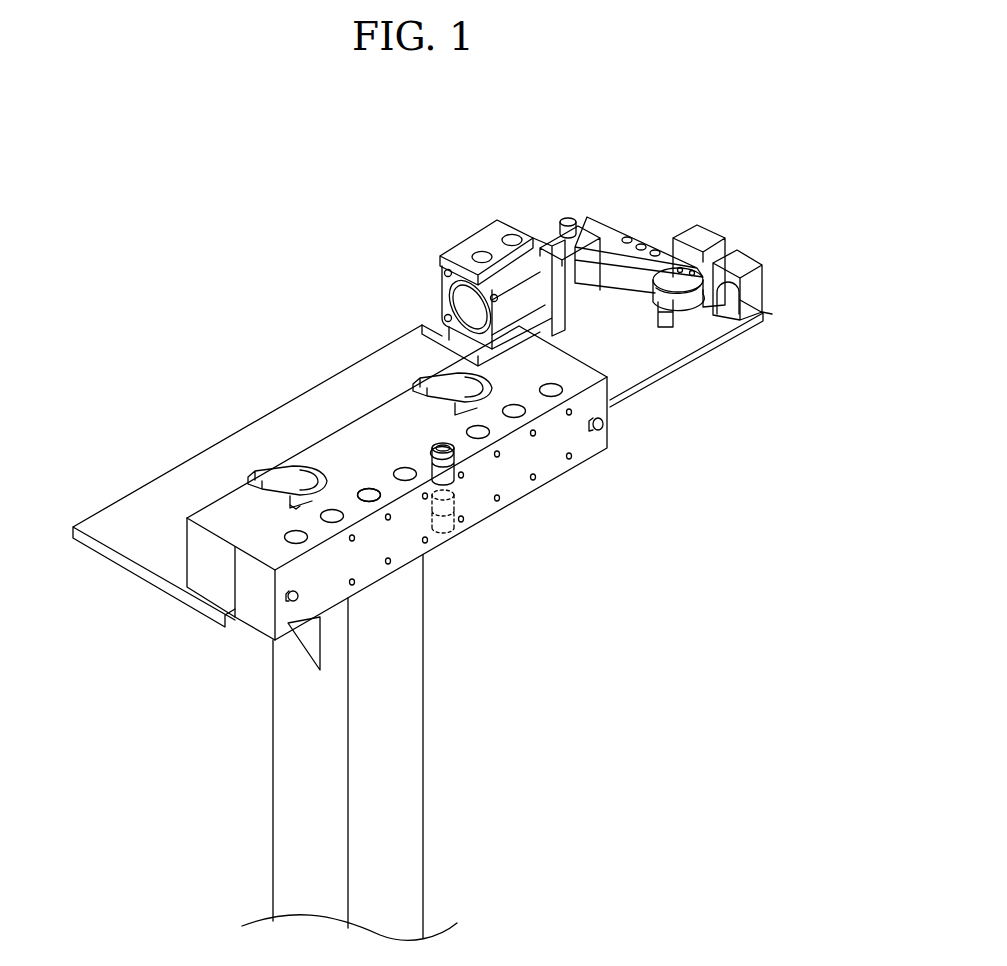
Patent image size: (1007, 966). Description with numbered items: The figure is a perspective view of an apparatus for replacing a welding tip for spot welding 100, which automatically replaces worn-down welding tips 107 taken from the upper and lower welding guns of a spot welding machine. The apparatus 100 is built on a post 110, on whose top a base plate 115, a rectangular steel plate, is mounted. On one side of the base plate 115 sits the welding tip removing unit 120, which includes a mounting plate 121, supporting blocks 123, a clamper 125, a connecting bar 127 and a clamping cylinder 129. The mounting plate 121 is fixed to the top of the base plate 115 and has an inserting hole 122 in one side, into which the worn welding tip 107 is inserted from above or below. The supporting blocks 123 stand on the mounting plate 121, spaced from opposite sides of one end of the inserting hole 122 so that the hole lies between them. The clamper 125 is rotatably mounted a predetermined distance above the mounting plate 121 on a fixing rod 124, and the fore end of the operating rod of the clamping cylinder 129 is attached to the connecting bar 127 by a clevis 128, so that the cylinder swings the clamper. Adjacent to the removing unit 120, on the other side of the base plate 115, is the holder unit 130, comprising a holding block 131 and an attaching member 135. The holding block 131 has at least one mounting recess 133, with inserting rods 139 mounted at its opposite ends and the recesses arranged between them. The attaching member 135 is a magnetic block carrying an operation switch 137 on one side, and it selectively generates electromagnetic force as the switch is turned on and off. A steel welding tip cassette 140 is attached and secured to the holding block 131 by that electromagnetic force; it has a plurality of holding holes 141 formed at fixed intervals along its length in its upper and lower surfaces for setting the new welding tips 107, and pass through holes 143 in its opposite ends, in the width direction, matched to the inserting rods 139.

The apparatus for replacing a welding tip for spot welding 100 is at (334, 173).
The welding tip 107 is at (458, 517).
The post 110 is at (404, 749).
The base plate 115 is at (138, 546).
The welding tip removing unit 120 is at (594, 289).
The mounting plate 121 is at (622, 363).
The inserting hole 122 is at (740, 305).
The supporting blocks 123 is at (735, 255).
The fixing rod 124 is at (665, 327).
The clamper 125 is at (685, 298).
The connecting bar 127 is at (622, 238).
The clevis 128 is at (553, 232).
The clamping cylinder 129 is at (480, 243).
The holder unit 130 is at (395, 456).
The holding block 131 is at (410, 407).
The mounting recess 133 is at (337, 514).
The attaching member 135 is at (297, 506).
The operation switch 137 is at (258, 474).
The inserting rods 139 is at (297, 636).
The welding tip cassette 140 is at (256, 612).
The holding holes 141 is at (368, 493).
The pass through holes 143 is at (594, 433).